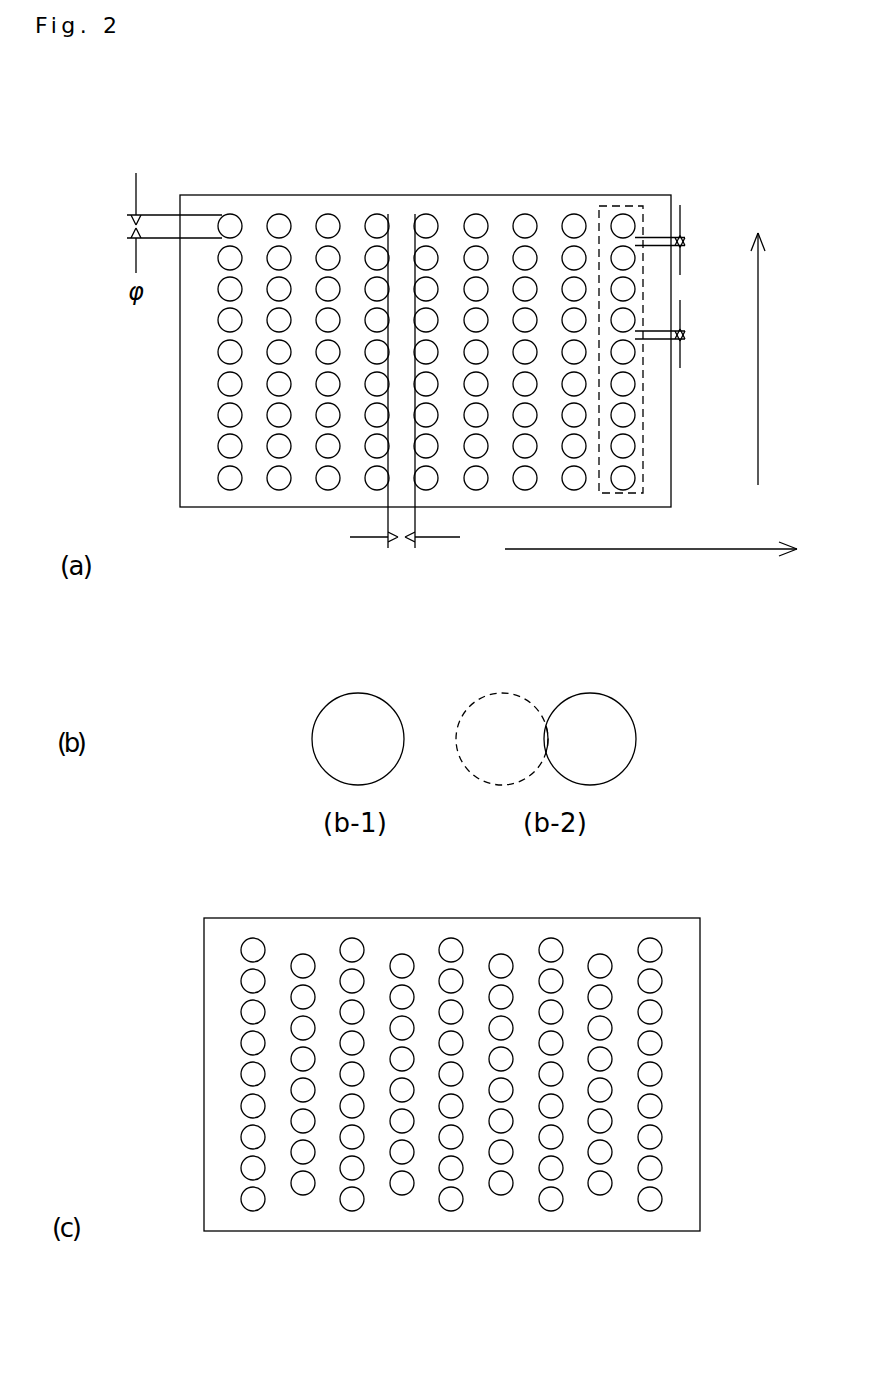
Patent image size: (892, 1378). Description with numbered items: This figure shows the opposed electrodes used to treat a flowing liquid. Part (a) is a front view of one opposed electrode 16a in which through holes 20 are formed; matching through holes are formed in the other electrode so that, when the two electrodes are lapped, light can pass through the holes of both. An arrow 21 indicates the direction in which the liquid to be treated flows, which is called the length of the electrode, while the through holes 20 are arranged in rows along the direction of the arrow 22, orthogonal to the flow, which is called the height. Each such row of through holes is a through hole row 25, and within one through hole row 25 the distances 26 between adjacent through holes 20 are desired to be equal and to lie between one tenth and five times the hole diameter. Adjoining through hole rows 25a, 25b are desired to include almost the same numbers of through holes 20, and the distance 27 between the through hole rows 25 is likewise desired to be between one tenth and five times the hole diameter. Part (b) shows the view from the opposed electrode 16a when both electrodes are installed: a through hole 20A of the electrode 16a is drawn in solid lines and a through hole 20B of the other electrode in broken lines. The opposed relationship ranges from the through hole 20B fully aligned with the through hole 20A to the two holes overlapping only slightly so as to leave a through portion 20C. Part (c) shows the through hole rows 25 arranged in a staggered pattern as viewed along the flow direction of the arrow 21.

The opposed electrode 16a is at (158, 145).
The through holes 20 is at (523, 215).
The through hole of the opposed electrode 16a 20A is at (311, 731).
The through hole of the opposed electrode 16b 20B is at (401, 718).
The through portion 20C is at (547, 735).
The arrow indicating the flow direction 21 is at (651, 576).
The arrow indicating the row direction 22 is at (783, 359).
The through hole row 25 is at (623, 197).
The through hole row 25a is at (280, 207).
The through hole row 25b is at (328, 207).
The distance between adjacent through holes 26 is at (685, 240).
The distance between through hole rows 27 is at (392, 548).